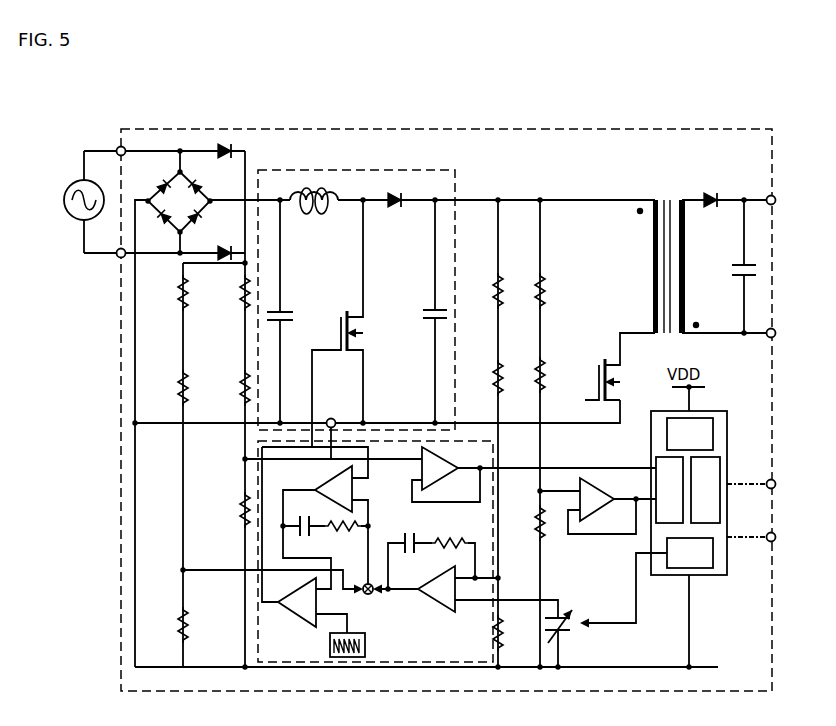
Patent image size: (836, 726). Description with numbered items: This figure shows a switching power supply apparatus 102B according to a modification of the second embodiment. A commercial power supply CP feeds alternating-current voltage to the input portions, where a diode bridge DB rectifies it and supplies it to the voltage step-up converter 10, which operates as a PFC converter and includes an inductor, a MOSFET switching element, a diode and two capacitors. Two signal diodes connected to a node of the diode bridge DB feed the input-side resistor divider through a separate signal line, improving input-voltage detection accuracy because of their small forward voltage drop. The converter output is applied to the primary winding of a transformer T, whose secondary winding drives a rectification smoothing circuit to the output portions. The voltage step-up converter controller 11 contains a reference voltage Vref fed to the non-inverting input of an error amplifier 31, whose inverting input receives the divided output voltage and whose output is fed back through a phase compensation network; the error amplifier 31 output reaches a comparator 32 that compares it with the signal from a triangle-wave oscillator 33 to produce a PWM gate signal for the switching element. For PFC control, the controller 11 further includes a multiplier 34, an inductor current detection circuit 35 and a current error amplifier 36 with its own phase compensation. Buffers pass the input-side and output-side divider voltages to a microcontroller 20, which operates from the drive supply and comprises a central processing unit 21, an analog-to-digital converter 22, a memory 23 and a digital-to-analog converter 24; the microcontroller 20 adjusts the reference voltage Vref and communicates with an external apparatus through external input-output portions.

The switching power supply apparatus 102B is at (178, 128).
The voltage step-up converter 10 is at (458, 184).
The voltage step-up converter controller 11 is at (257, 477).
The microcontroller 20 is at (724, 410).
The central processing unit 21 is at (671, 418).
The analog-to-digital converter 22 is at (660, 456).
The memory 23 is at (722, 477).
The digital-to-analog converter 24 is at (706, 572).
The error amplifier 31 is at (432, 579).
The comparator 32 is at (290, 616).
The triangle-wave oscillator 33 is at (366, 646).
The multiplier 34 is at (376, 593).
The inductor current detection circuit 35 is at (331, 413).
The current error amplifier 36 is at (328, 489).
The commercial power supply CP is at (78, 192).
The diode bridge DB is at (178, 198).
The transformer T is at (667, 252).
The reference voltage Vref is at (571, 637).